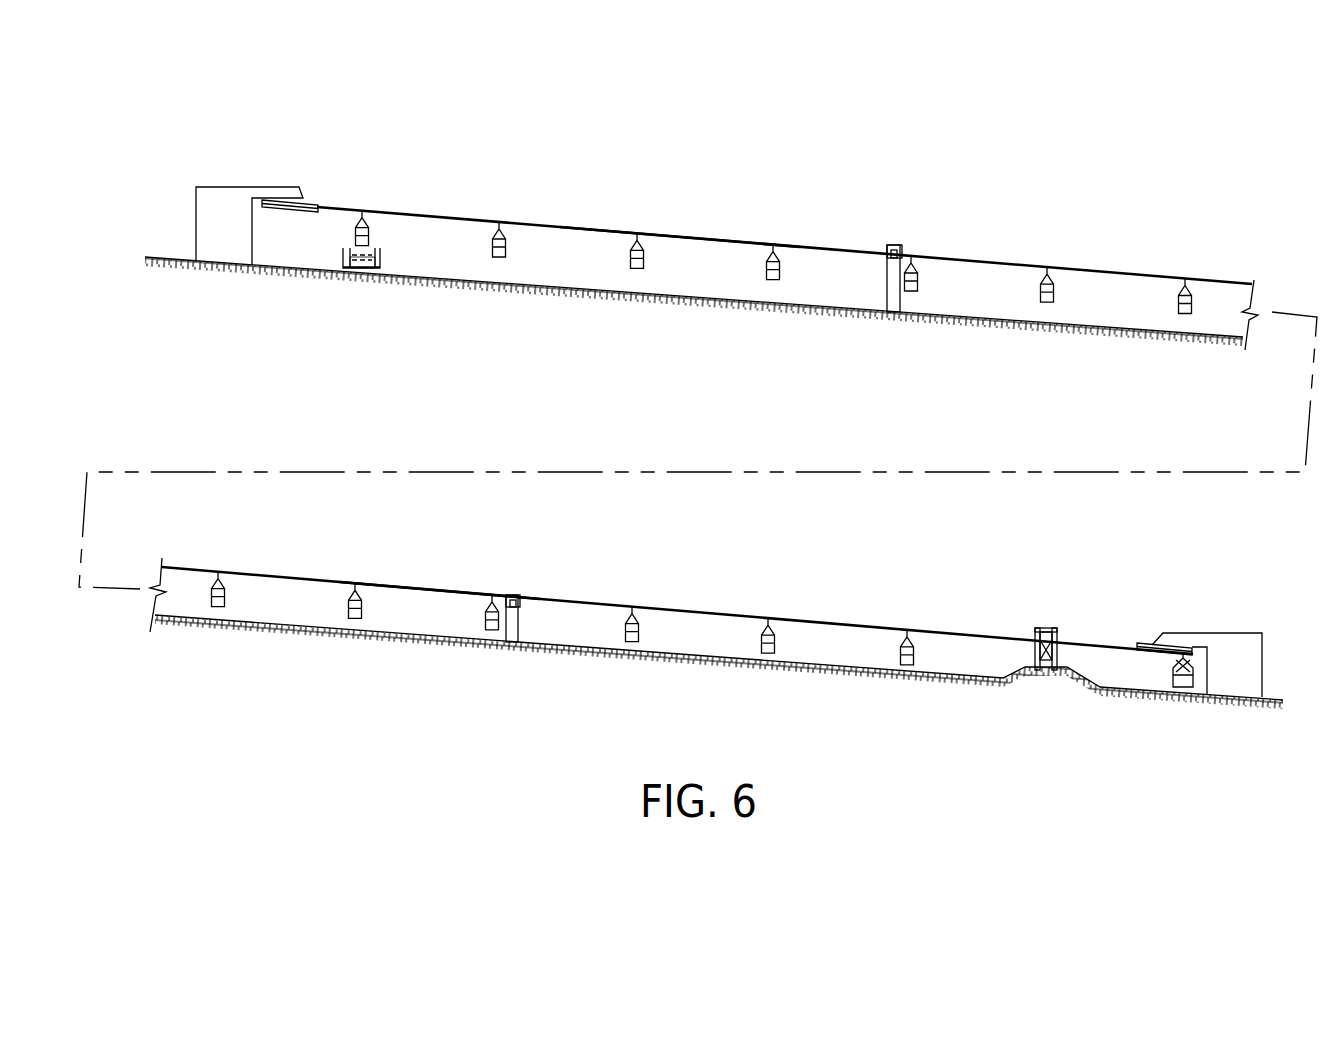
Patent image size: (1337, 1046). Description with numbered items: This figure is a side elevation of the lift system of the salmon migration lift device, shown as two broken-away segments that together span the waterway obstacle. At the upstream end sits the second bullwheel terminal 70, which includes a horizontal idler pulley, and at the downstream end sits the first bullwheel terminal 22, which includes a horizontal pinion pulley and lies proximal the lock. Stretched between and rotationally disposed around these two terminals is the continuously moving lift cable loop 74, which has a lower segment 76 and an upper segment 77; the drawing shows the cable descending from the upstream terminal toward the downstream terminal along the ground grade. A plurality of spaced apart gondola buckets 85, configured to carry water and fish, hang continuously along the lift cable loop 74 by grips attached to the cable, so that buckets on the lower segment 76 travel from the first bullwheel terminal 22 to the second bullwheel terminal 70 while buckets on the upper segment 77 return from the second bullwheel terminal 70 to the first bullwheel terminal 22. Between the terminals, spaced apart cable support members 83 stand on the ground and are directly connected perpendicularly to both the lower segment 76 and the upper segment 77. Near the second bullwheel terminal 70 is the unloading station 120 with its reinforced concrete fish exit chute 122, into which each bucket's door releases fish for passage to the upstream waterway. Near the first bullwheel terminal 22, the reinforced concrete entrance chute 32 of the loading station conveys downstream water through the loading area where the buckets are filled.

The second bullwheel terminal 70 is at (277, 189).
The unloading station 120 is at (351, 250).
The fish exit chute 122 is at (378, 266).
The lift cable loop 74 is at (568, 214).
The upper segment 77 is at (677, 233).
The lower segment 76 is at (440, 589).
The cable support member 83 is at (886, 244).
The gondola bucket 85 is at (918, 286).
The entrance chute 32 is at (1055, 627).
The first bullwheel terminal 22 is at (1172, 644).